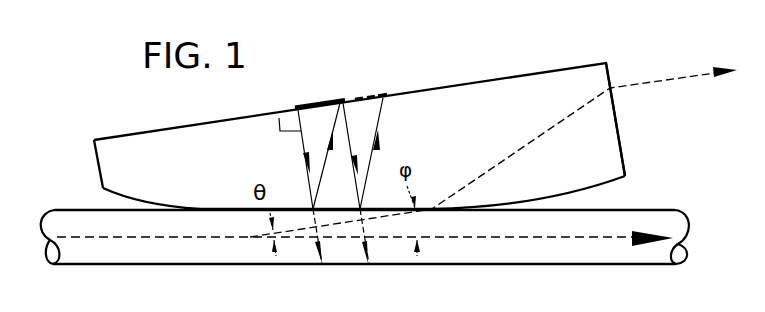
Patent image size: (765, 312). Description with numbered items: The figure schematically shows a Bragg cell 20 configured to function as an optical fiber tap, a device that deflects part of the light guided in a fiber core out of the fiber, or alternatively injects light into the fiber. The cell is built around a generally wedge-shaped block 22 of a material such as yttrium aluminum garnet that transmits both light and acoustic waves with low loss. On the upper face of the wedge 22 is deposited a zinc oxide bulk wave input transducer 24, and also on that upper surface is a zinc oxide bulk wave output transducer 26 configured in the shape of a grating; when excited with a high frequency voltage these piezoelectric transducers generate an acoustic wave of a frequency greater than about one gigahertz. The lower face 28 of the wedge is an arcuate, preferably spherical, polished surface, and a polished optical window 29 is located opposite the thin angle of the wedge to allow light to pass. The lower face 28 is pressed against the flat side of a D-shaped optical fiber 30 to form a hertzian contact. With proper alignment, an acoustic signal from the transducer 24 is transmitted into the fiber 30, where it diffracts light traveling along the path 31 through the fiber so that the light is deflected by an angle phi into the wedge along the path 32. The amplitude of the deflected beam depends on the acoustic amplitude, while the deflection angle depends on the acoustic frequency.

The Bragg cell 20 is at (99, 103).
The wedge-shaped block 22 is at (502, 87).
The bulk wave input transducer 24 is at (325, 100).
The bulk wave output transducer 26 is at (379, 76).
The lower face 28 is at (152, 201).
The optical window 29 is at (617, 122).
The optical fiber 30 is at (658, 268).
The light path 31 is at (168, 238).
The diffracted light path 32 is at (523, 148).